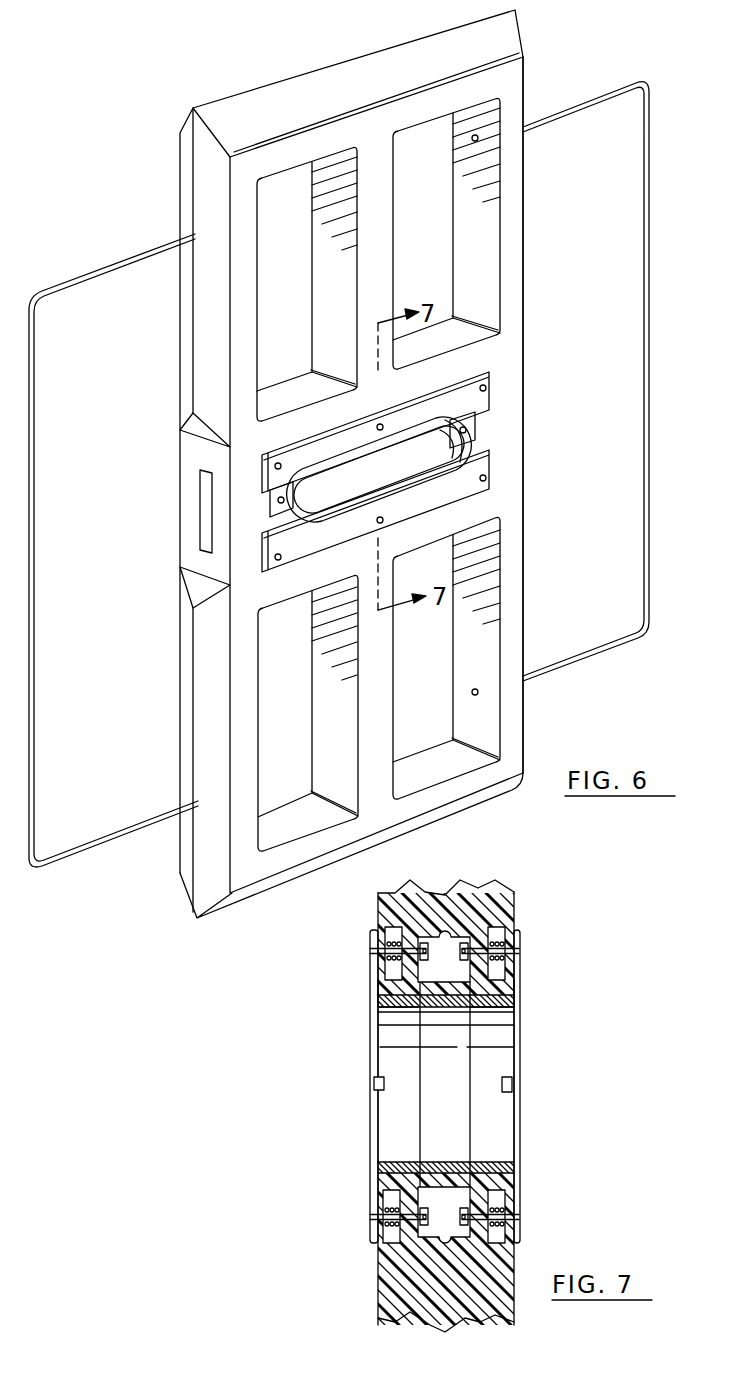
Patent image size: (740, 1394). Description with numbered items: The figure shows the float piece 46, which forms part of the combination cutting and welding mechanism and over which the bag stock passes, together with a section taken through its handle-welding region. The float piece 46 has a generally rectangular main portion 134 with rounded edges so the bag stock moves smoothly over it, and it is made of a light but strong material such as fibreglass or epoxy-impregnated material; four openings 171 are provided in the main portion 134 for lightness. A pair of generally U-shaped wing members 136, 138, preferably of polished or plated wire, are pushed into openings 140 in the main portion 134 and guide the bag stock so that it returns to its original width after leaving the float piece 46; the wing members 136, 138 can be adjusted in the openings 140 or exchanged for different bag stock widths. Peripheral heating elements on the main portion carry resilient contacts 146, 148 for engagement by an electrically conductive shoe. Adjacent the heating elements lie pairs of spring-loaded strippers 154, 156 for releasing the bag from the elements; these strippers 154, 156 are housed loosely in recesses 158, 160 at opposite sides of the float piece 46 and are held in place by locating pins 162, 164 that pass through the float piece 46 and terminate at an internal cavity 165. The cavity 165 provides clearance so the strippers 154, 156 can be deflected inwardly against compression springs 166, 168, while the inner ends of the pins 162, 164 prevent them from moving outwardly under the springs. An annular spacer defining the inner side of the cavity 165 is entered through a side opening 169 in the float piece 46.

In FIG. 6, the float piece 46 is at (236, 94).
In FIG. 6, the main portion 134 is at (527, 83).
In FIG. 6, the wing member 136 is at (113, 262).
In FIG. 6, the wing member 138 is at (590, 95).
In FIG. 6, the openings 140 is at (478, 142).
In FIG. 6, the resilient contact 146 is at (418, 432).
In FIG. 7, the resilient contact 146 is at (375, 1083).
In FIG. 6, the resilient contact 148 is at (494, 458).
In FIG. 7, the resilient contact 148 is at (513, 1098).
In FIG. 7, the spring-loaded stripper 154 is at (370, 940).
In FIG. 6, the spring-loaded stripper 156 is at (493, 399).
In FIG. 7, the spring-loaded stripper 156 is at (520, 940).
In FIG. 7, the recess 158 is at (388, 926).
In FIG. 7, the recess 160 is at (512, 927).
In FIG. 7, the locating pin 162 is at (370, 951).
In FIG. 7, the locating pin 164 is at (520, 953).
In FIG. 7, the internal cavity 165 is at (452, 936).
In FIG. 7, the compression spring 166 is at (378, 982).
In FIG. 7, the compression spring 168 is at (513, 975).
In FIG. 6, the side opening 169 is at (202, 504).
In FIG. 6, the openings 171 is at (398, 132).